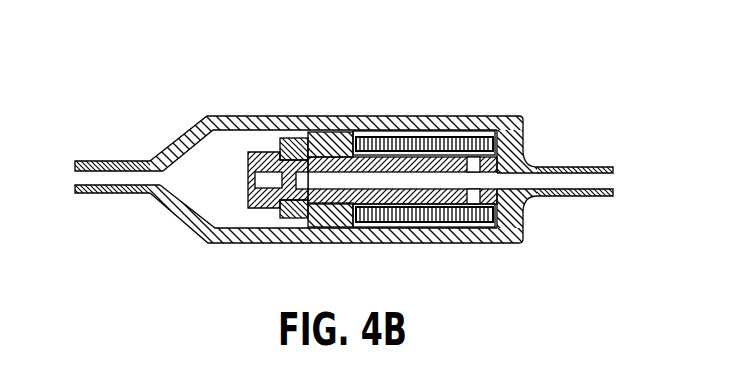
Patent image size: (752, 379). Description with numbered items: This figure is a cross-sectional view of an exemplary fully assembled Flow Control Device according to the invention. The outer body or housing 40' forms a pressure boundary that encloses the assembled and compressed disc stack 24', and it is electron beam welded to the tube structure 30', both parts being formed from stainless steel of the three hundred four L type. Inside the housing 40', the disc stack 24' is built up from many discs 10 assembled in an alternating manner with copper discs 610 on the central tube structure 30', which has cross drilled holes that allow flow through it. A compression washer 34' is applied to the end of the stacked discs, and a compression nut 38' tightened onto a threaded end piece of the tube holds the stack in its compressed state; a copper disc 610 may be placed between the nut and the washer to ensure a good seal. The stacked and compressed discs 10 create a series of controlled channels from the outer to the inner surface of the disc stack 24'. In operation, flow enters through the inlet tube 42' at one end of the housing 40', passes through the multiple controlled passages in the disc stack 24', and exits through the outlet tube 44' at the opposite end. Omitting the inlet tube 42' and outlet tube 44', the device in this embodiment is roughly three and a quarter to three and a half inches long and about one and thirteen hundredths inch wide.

The housing 40' is at (334, 133).
The inlet tube 42' is at (119, 133).
The outlet tube 44' is at (555, 135).
The tube structure 30' is at (553, 194).
The disc stack 24' is at (202, 200).
The compression nut 38' is at (272, 133).
The compression washer 34' is at (402, 132).
The disc 10 is at (436, 134).
The copper disc 610 is at (434, 132).